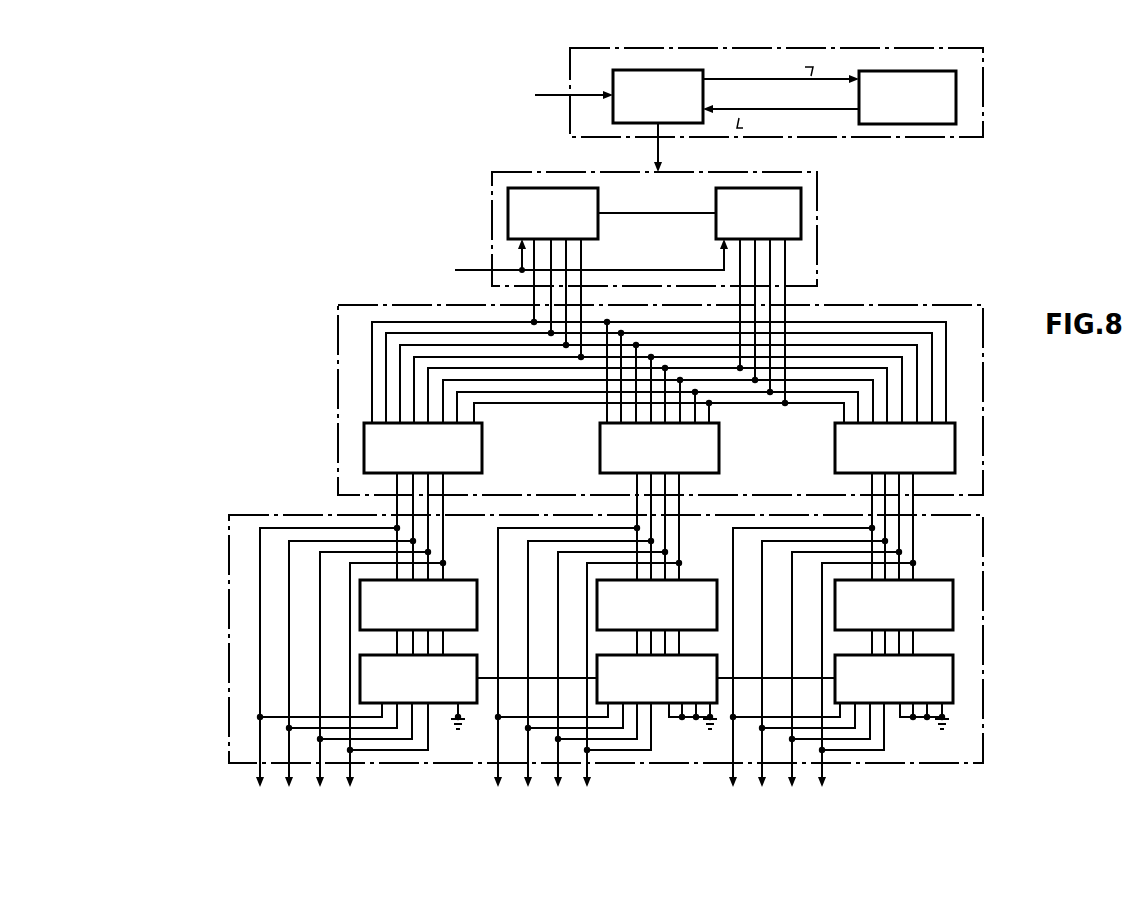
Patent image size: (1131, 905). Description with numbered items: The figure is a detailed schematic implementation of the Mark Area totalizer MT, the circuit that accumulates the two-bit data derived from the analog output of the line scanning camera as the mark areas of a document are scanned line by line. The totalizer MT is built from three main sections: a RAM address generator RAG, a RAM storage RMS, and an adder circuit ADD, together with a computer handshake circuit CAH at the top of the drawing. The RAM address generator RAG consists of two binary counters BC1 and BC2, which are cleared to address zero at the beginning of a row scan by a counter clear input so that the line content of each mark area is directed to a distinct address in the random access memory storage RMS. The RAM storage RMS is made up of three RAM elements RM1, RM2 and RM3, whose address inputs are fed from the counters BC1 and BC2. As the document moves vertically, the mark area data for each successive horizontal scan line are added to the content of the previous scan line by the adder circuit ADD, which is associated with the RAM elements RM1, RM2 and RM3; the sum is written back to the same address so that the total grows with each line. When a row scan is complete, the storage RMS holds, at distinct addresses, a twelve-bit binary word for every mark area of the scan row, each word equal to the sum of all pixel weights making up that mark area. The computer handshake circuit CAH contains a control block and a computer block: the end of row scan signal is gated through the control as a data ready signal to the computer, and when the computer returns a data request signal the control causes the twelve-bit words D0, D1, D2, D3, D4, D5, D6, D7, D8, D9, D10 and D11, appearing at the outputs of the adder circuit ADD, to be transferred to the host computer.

The Mark Area totalizer MT is at (167, 272).
The computer handshake circuit CAH is at (983, 62).
The RAM address generator RAG is at (817, 182).
The binary counter BC1 is at (508, 196).
The binary counter BC2 is at (801, 216).
The RAM storage RMS is at (338, 320).
The RAM element RM1 is at (482, 462).
The RAM element RM2 is at (719, 462).
The RAM element RM3 is at (955, 460).
The adder circuit ADD is at (229, 528).
The twelve-bit word bit D0 is at (324, 671).
The twelve-bit word bit D1 is at (347, 677).
The twelve-bit word bit D2 is at (369, 683).
The twelve-bit word bit D3 is at (392, 688).
The twelve-bit word bit D4 is at (563, 671).
The twelve-bit word bit D5 is at (585, 677).
The twelve-bit word bit D6 is at (607, 683).
The twelve-bit word bit D7 is at (628, 688).
The twelve-bit word bit D8 is at (798, 671).
The twelve-bit word bit D9 is at (819, 677).
The twelve-bit word bit D10 is at (839, 683).
The twelve-bit word bit D11 is at (862, 688).